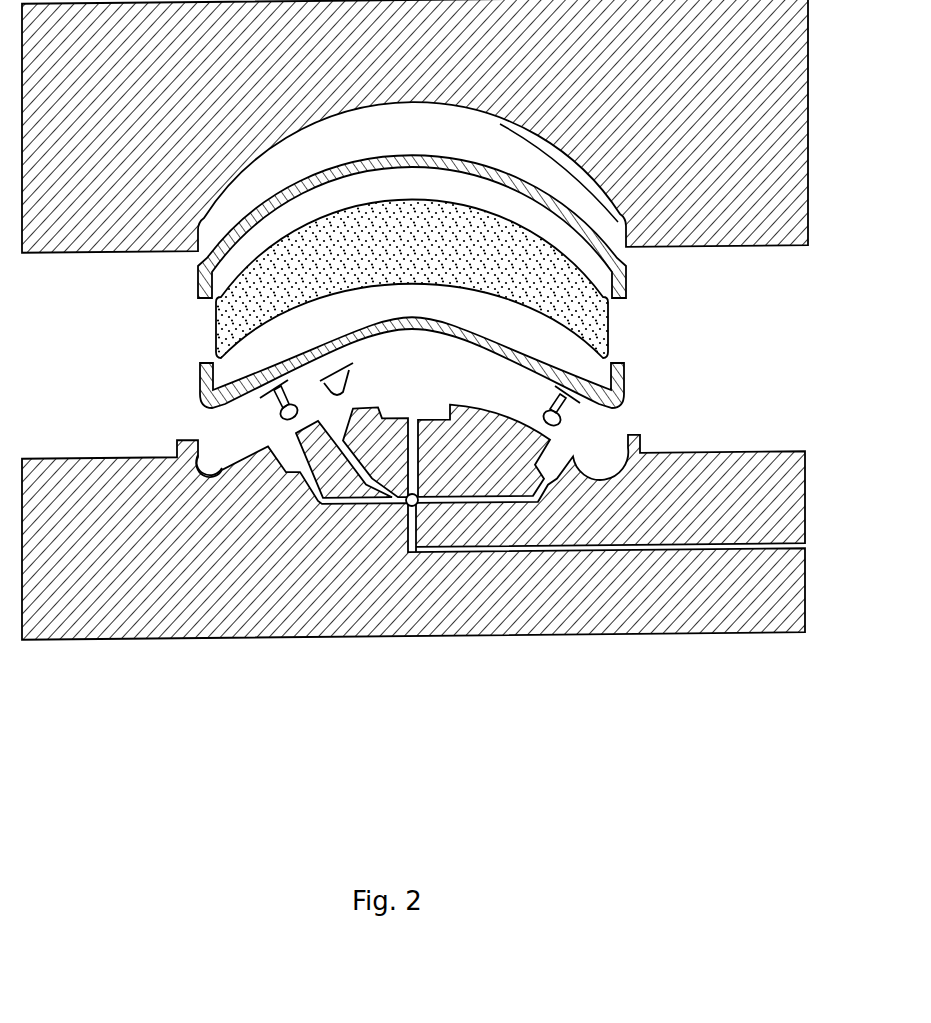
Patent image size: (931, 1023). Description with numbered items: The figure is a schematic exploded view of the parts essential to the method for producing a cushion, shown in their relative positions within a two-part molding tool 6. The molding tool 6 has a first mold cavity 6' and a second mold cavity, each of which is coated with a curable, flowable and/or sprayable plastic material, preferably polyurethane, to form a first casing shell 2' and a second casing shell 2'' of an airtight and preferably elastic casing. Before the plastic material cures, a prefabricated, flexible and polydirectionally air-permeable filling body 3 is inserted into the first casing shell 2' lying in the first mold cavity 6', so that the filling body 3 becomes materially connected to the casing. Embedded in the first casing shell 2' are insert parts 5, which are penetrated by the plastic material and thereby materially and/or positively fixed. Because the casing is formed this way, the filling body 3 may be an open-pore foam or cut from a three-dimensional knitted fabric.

The two-part molding tool 6 is at (444, 320).
The first mold cavity 6' is at (131, 439).
The filling body 3 is at (215, 332).
The first casing shell 2' is at (332, 362).
The second casing shell 2'' is at (532, 219).
The insert parts 5 is at (285, 423).